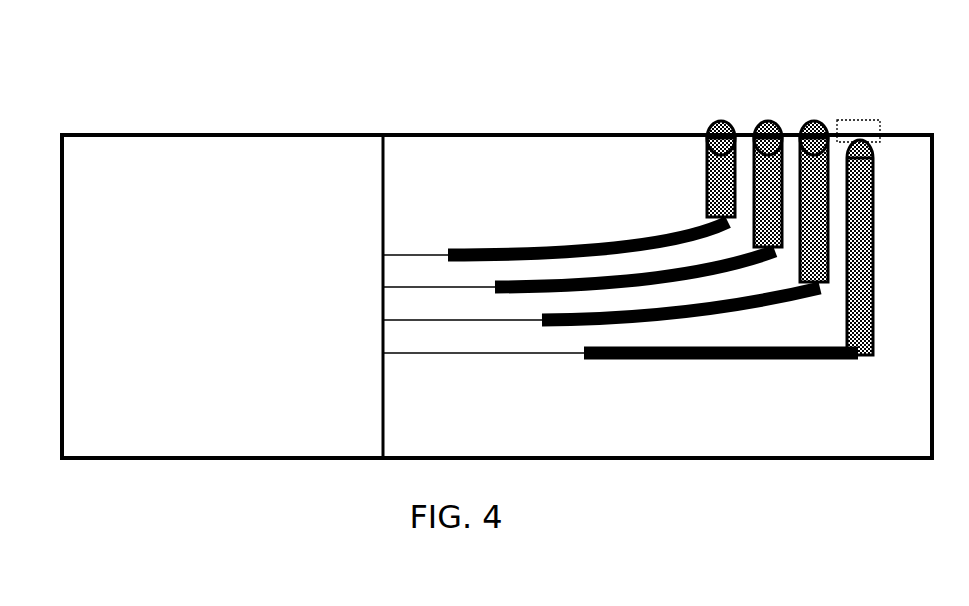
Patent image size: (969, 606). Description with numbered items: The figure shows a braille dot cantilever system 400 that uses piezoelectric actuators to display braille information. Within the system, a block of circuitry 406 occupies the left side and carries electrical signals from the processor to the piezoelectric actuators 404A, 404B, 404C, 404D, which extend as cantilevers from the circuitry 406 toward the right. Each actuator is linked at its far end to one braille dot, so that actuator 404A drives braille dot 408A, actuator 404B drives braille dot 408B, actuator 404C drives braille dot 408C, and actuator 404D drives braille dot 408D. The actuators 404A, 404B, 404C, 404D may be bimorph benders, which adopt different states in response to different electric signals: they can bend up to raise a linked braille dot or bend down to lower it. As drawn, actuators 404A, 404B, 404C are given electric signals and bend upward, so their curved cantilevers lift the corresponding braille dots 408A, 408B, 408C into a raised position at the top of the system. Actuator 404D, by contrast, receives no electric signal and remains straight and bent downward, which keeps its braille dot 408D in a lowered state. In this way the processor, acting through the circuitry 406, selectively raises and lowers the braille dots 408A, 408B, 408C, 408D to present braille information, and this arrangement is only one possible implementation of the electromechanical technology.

The braille dot cantilever system 400 is at (196, 62).
The circuitry 406 is at (62, 232).
The piezoelectric actuator 404A is at (482, 247).
The piezoelectric actuator 404B is at (523, 280).
The piezoelectric actuator 404C is at (563, 313).
The piezoelectric actuator 404D is at (607, 346).
The braille dot 408A is at (722, 120).
The braille dot 408B is at (769, 120).
The braille dot 408C is at (816, 120).
The braille dot 408D is at (860, 133).